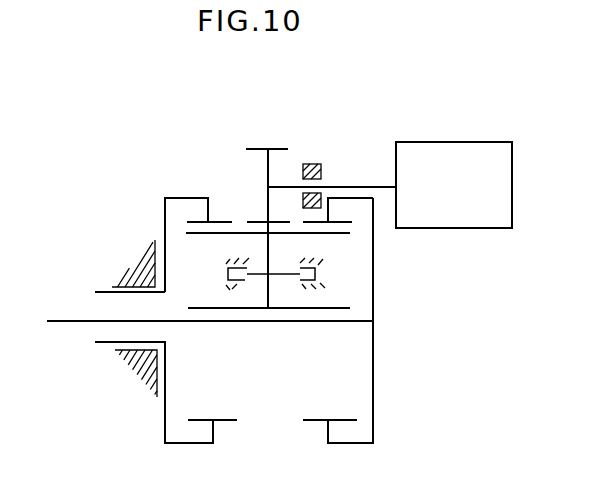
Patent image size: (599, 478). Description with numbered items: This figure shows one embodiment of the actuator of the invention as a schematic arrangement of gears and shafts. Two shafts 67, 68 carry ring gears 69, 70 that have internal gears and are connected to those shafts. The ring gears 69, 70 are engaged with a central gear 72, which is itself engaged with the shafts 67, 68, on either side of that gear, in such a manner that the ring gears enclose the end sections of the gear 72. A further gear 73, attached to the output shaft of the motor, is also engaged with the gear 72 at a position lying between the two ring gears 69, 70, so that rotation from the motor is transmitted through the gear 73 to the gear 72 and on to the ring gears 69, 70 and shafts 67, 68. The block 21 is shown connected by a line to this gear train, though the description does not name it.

The control unit 21 is at (453, 157).
The shaft 67 is at (70, 318).
The shaft 68 is at (105, 291).
The ring gear 69 is at (211, 221).
The ring gear 70 is at (343, 221).
The gear 72 is at (333, 234).
The gear 73 is at (284, 149).